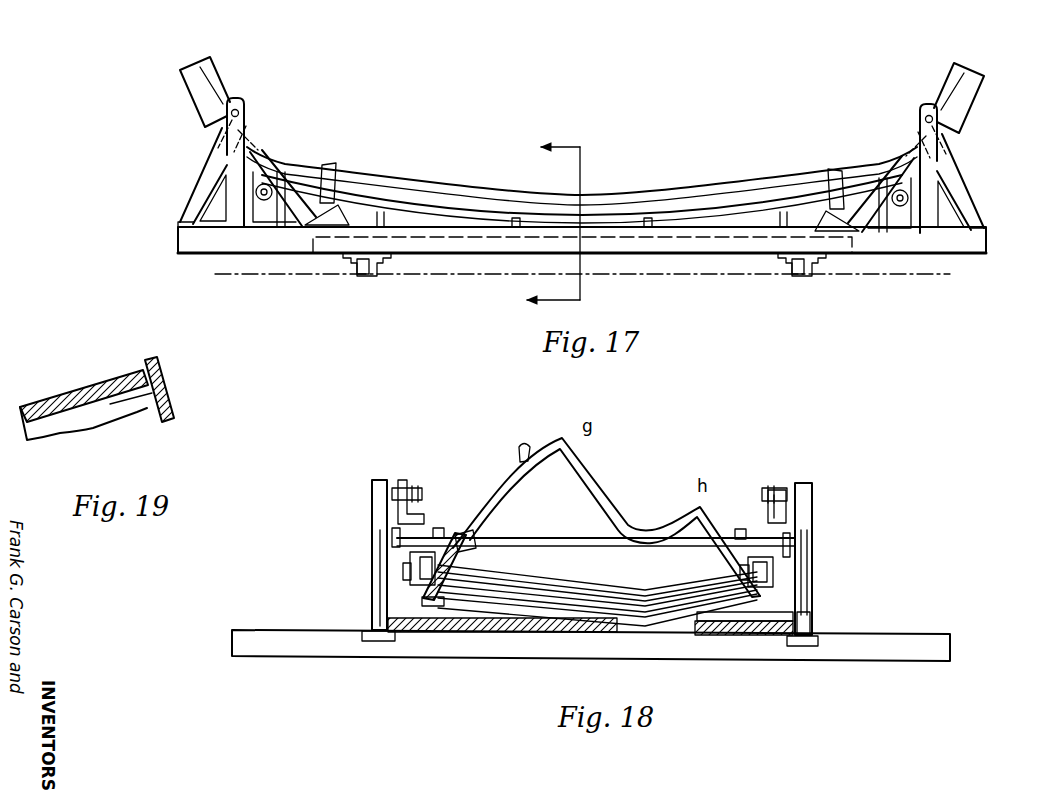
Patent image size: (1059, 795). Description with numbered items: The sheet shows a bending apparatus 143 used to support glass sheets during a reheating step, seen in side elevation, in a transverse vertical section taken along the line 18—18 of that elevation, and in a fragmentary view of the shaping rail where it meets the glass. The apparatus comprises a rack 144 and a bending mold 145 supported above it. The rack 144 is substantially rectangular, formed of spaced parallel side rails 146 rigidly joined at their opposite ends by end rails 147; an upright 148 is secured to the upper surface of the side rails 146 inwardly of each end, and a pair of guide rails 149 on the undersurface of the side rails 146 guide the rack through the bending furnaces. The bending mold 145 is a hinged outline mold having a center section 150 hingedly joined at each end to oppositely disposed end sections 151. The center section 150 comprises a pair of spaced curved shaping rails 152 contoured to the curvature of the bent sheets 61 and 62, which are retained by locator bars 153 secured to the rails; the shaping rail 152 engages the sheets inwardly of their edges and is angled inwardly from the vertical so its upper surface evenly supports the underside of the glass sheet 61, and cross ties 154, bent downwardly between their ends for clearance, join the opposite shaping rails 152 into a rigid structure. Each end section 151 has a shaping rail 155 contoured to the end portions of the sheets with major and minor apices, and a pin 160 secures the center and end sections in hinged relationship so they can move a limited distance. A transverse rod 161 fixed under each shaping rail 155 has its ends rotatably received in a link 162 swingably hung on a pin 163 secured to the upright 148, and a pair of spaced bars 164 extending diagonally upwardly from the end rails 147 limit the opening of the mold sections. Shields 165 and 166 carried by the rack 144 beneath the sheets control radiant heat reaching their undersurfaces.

In FIG. 17, the section line 18— 18 is at (563, 135).
In FIG. 19, the bent glass sheet 61 is at (162, 380).
In FIG. 19, the bent glass sheet 62 is at (153, 392).
In FIG. 17, the bending apparatus 143 is at (582, 142).
In FIG. 17, the rack 144 is at (181, 240).
In FIG. 18, the rack 144 is at (371, 614).
In FIG. 17, the bending mold 145 is at (638, 192).
In FIG. 18, the bending mold 145 is at (606, 512).
In FIG. 17, the side rails 146 is at (232, 238).
In FIG. 18, the side rails 146 is at (811, 624).
In FIG. 18, the end rails 147 is at (771, 612).
In FIG. 17, the upright 148 is at (235, 200).
In FIG. 18, the upright 148 is at (372, 566).
In FIG. 17, the guide rails 149 is at (366, 278).
In FIG. 18, the guide rails 149 is at (906, 652).
In FIG. 17, the center section 150 is at (438, 186).
In FIG. 18, the center section 150 is at (440, 612).
In FIG. 17, the end sections 151 is at (196, 80).
In FIG. 18, the end sections 151 is at (504, 470).
In FIG. 17, the shaping rails 152 is at (705, 203).
In FIG. 18, the shaping rails 152 is at (441, 566).
In FIG. 17, the locator bars 153 is at (338, 177).
In FIG. 18, the locator bars 153 is at (478, 538).
In FIG. 17, the cross ties 154 is at (649, 230).
In FIG. 18, the cross ties 154 is at (671, 628).
In FIG. 17, the shaping rail 155 is at (217, 92).
In FIG. 18, the shaping rail 155 is at (608, 502).
In FIG. 19, the shaping rail 155 is at (125, 383).
In FIG. 17, the pin 160 is at (267, 206).
In FIG. 18, the pin 160 is at (405, 578).
In FIG. 18, the transverse rod 161 is at (797, 545).
In FIG. 17, the link 162 is at (232, 141).
In FIG. 18, the link 162 is at (410, 517).
In FIG. 17, the pin 163 is at (231, 113).
In FIG. 18, the pin 163 is at (407, 489).
In FIG. 17, the bars 164 is at (206, 176).
In FIG. 18, the bars 164 is at (438, 529).
In FIG. 18, the shield 165 is at (459, 634).
In FIG. 18, the shield 166 is at (746, 630).